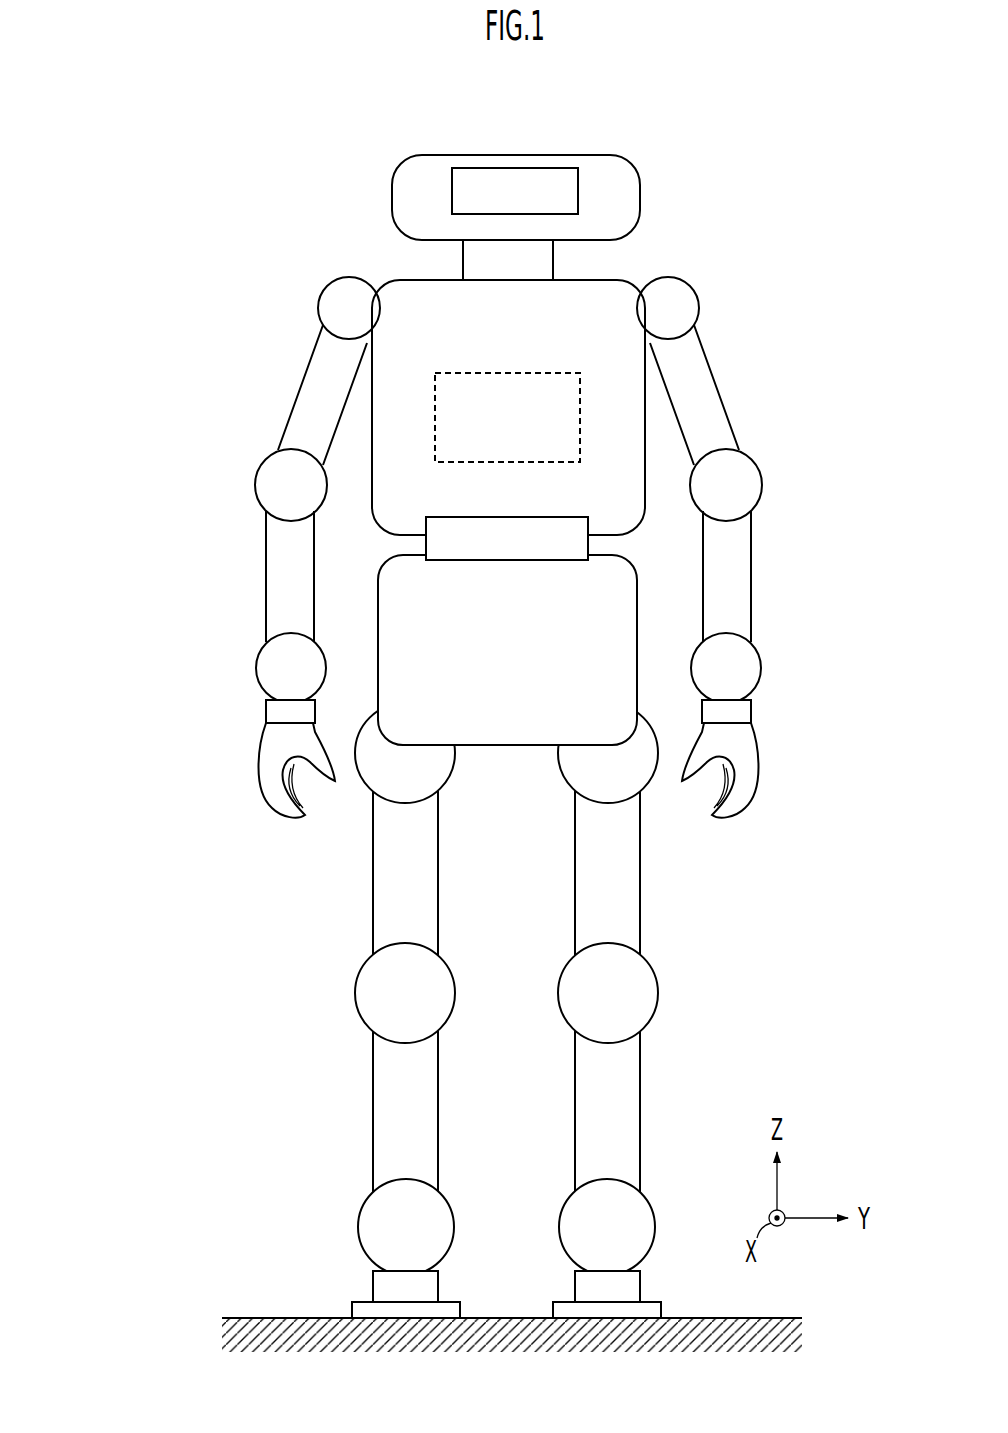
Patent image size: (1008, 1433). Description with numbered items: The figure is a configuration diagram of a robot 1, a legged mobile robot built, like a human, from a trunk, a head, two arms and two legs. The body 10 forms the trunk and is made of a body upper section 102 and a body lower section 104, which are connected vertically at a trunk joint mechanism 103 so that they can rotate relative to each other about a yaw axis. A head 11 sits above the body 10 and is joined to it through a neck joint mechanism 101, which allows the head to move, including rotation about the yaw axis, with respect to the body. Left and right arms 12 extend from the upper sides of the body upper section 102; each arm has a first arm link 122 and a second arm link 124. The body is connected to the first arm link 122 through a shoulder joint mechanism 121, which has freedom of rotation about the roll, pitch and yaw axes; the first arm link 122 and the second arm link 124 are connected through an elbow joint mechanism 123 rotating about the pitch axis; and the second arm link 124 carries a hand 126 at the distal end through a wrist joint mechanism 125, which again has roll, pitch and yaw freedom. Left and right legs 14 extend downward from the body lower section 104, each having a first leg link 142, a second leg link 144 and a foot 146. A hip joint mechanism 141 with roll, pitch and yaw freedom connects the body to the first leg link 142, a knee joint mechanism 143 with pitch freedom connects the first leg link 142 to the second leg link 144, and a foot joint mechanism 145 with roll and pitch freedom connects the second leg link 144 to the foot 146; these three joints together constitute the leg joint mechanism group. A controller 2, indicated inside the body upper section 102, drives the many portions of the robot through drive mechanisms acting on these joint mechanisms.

The robot 1 is at (731, 71).
The controller 2 is at (518, 370).
The body 10 is at (657, 425).
The head 11 is at (624, 186).
The arm 12 is at (131, 404).
The leg 14 is at (180, 825).
The neck joint mechanism 101 is at (548, 258).
The body upper section 102 is at (623, 478).
The trunk joint mechanism 103 is at (572, 545).
The body lower section 104 is at (607, 630).
The shoulder joint mechanism 121 is at (333, 302).
The first arm link 122 is at (290, 400).
The elbow joint mechanism 123 is at (281, 485).
The second arm link 124 is at (271, 548).
The wrist joint mechanism 125 is at (271, 676).
The hand 126 is at (262, 755).
The hip joint mechanism 141 is at (378, 782).
The first leg link 142 is at (383, 912).
The knee joint mechanism 143 is at (373, 1000).
The second leg link 144 is at (378, 1055).
The foot joint mechanism 145 is at (375, 1220).
The foot 146 is at (356, 1302).